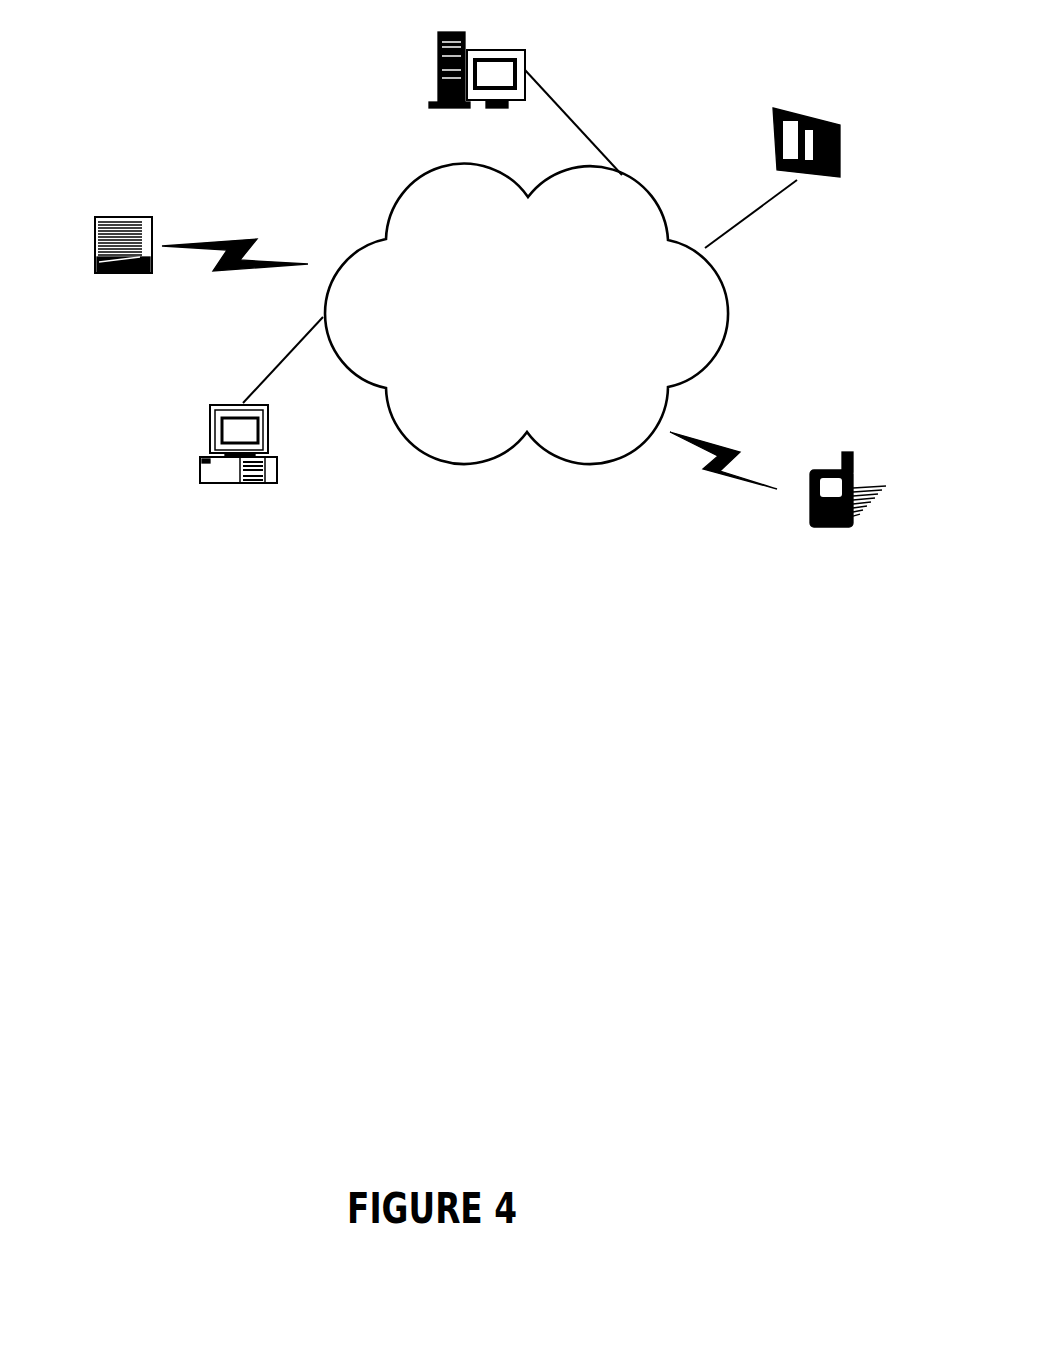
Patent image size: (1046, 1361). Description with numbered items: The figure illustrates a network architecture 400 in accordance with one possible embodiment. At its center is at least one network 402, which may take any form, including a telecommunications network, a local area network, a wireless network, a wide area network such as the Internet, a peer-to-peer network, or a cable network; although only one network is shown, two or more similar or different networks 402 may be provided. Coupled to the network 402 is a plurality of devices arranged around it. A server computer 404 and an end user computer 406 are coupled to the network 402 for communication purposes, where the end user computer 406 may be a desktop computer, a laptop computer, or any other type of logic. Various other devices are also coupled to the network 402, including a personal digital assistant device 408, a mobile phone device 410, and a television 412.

The network architecture 400 is at (434, 766).
The network 402 is at (585, 463).
The server computer 404 is at (437, 70).
The end user computer 406 is at (200, 462).
The personal digital assistant (PDA) device 408 is at (122, 217).
The mobile phone device 410 is at (808, 470).
The television 412 is at (787, 102).